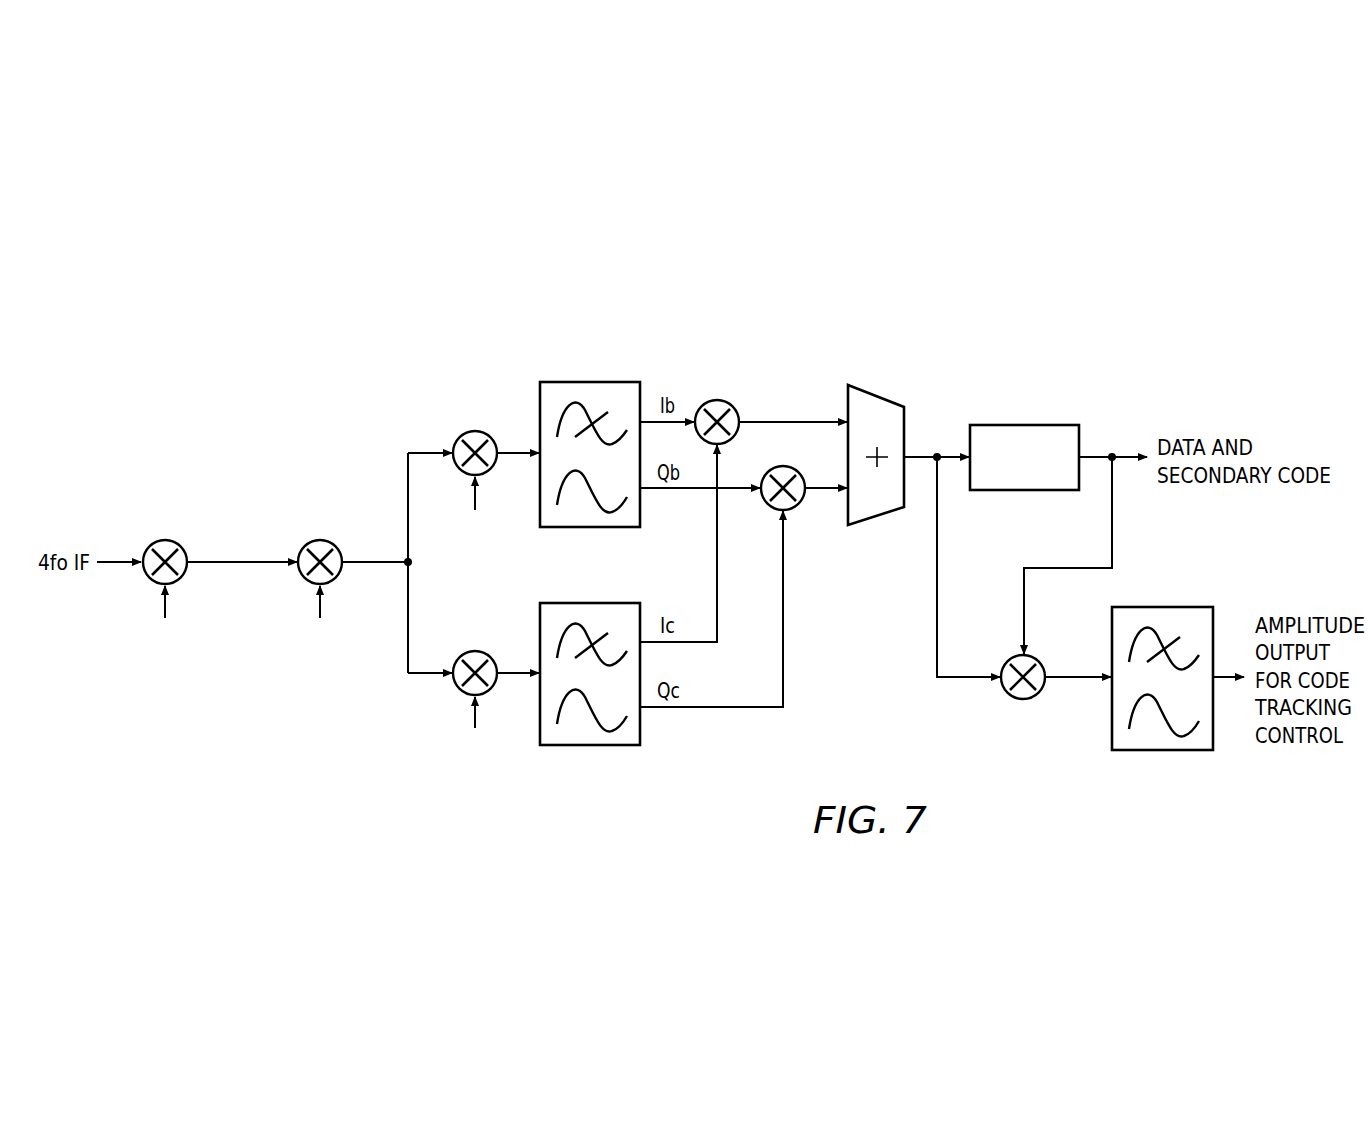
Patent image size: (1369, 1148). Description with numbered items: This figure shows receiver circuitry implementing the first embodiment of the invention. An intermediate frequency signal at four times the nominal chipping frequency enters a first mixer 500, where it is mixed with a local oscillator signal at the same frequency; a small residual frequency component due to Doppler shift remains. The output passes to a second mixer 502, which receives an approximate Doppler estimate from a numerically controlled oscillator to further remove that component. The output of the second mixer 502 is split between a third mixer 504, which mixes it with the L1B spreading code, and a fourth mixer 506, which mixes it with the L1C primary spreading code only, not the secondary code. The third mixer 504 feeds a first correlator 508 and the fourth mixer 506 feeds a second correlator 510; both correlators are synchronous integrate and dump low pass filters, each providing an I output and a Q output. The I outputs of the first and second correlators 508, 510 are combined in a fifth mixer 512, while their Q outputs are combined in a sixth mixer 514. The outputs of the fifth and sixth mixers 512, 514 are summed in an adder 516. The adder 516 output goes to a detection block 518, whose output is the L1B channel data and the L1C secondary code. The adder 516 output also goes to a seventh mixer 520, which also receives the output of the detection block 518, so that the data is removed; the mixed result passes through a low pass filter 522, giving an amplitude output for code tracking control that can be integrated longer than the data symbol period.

The first mixer 500 is at (150, 543).
The second mixer 502 is at (305, 543).
The third mixer 504 is at (460, 437).
The fourth mixer 506 is at (460, 657).
The first correlator 508 is at (590, 382).
The second correlator 510 is at (590, 745).
The fifth mixer 512 is at (729, 402).
The sixth mixer 514 is at (792, 508).
The adder 516 is at (877, 396).
The detection block 518 is at (1025, 425).
The seventh mixer 520 is at (1034, 697).
The low pass filter 522 is at (1162, 750).